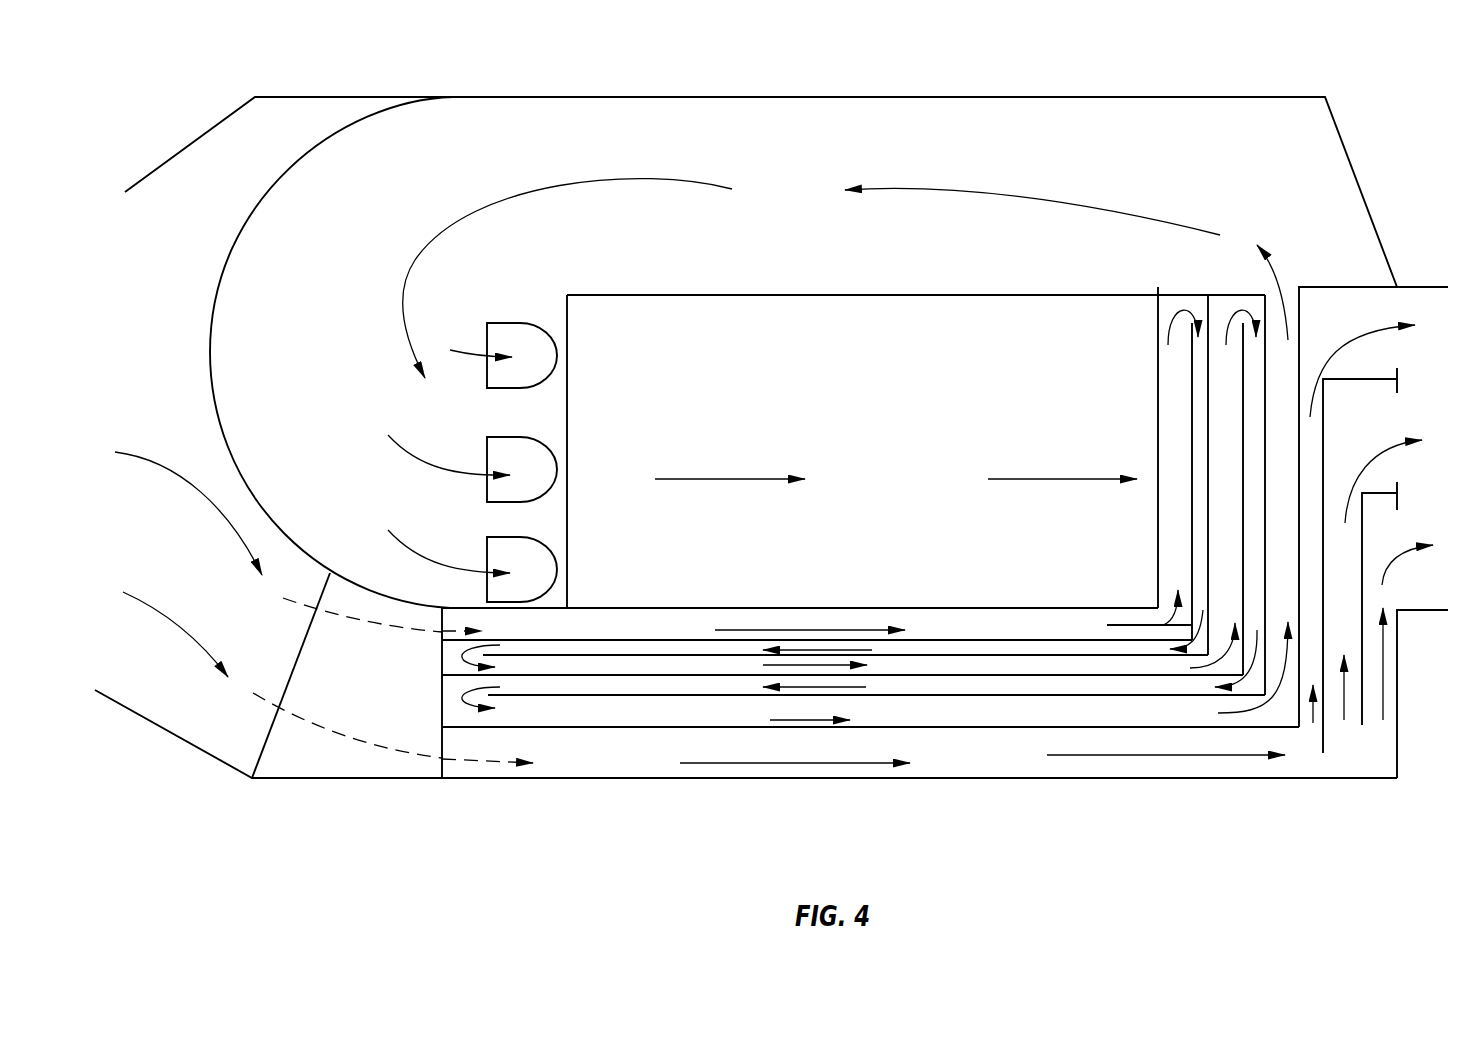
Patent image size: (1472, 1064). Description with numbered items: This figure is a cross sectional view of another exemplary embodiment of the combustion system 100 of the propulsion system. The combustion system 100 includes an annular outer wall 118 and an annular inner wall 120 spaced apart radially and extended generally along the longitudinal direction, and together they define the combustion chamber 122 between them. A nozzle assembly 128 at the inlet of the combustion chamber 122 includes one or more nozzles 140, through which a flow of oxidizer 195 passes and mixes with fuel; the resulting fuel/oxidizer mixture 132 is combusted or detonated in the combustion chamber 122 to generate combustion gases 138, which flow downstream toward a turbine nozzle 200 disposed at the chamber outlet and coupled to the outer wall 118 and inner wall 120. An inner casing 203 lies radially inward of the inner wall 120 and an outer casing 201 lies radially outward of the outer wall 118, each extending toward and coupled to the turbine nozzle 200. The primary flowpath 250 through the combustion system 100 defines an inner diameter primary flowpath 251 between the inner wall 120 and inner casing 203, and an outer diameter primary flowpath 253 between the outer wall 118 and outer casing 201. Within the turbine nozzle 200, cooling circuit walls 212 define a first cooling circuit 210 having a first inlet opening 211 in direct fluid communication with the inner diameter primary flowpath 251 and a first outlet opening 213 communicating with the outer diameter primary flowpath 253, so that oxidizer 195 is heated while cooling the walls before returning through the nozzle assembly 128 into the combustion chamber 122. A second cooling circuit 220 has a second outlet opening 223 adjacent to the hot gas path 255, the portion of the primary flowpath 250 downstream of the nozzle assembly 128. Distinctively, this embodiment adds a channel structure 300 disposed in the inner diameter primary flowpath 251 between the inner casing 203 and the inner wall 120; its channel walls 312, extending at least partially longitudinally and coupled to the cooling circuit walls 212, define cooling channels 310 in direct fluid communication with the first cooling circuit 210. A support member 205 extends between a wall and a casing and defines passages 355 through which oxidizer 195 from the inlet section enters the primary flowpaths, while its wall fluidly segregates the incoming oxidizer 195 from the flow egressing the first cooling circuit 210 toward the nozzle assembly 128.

The combustion system 100 is at (717, 872).
The annular outer wall 118 is at (890, 297).
The annular inner wall 120 is at (850, 608).
The combustion chamber 122 is at (832, 392).
The nozzle assembly 128 is at (513, 302).
The fuel/oxidizer mixture 132 is at (720, 480).
The combustion gases 138 is at (1055, 482).
The nozzle 140 is at (538, 340).
The oxidizer 195 is at (483, 207).
The turbine nozzle 200 is at (1322, 270).
The outer casing 201 is at (710, 96).
The inner casing 203 is at (562, 778).
The support member 205 is at (253, 203).
The first cooling circuit 210 is at (1203, 372).
The first inlet opening 211 is at (1165, 608).
The cooling circuit wall 212 is at (1190, 410).
The first outlet opening 213 is at (1292, 270).
The second cooling circuit 220 is at (1352, 313).
The second outlet opening 223 is at (1398, 583).
The primary flowpath 250 is at (140, 422).
The inner diameter primary flowpath 251 is at (1013, 635).
The outer diameter primary flowpath 253 is at (1000, 162).
The hot gas path 255 is at (1442, 492).
The channel structure 300 is at (1018, 758).
The cooling channel 310 is at (1032, 724).
The channel wall 312 is at (963, 728).
The passage 355 is at (353, 698).